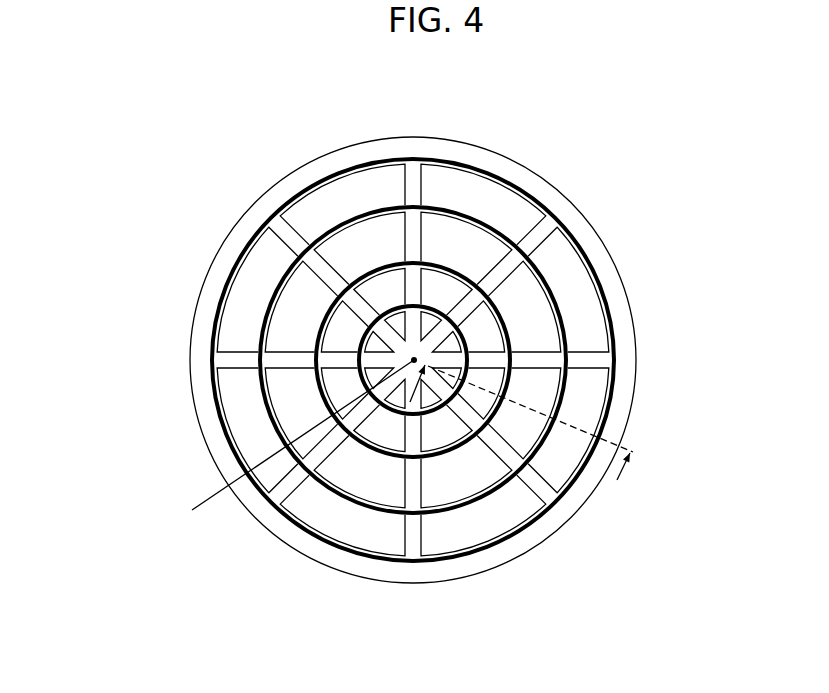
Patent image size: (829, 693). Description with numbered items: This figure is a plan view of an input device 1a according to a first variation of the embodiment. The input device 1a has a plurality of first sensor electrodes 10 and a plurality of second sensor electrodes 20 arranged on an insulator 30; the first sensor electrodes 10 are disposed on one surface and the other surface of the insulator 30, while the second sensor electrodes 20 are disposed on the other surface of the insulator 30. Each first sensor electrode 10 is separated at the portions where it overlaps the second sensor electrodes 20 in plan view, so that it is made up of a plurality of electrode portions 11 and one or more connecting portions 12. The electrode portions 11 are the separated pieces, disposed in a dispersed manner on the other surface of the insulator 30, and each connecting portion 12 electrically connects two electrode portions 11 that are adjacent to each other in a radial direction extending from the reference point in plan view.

The input device 1a is at (449, 138).
The first sensor electrodes 10 is at (555, 80).
The electrode portions 11 is at (503, 213).
The connecting portions 12 is at (470, 217).
The second sensor electrodes 20 is at (558, 217).
The insulator 30 is at (610, 253).